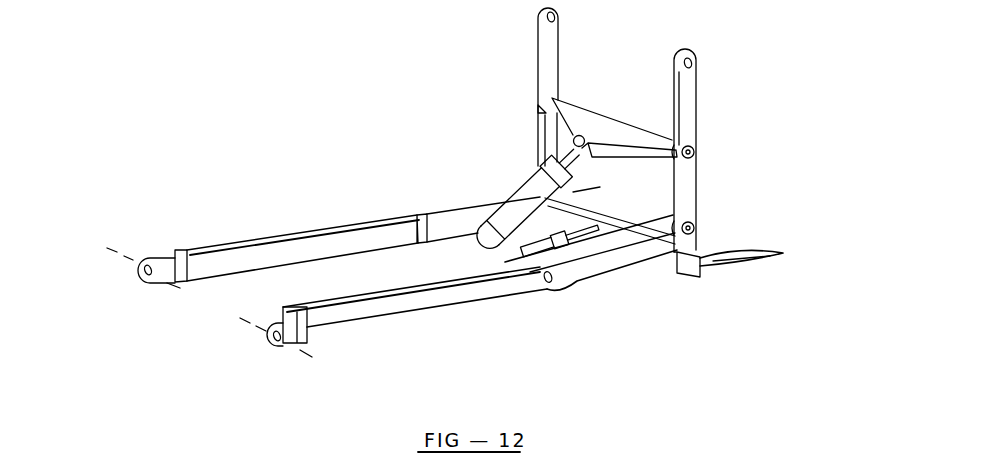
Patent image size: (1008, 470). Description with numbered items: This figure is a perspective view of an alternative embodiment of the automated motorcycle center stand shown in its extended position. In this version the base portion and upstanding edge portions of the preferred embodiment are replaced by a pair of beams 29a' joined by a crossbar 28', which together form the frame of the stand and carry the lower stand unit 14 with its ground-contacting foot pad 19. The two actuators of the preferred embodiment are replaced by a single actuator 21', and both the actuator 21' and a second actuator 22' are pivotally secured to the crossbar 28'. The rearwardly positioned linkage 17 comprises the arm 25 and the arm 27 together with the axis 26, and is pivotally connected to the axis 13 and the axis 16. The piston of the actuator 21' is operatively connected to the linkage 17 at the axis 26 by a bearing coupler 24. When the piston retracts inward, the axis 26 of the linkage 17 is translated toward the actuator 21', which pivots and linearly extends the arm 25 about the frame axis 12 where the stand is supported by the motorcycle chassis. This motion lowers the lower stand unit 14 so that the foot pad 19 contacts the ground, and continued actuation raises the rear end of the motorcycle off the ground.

The axis 12 is at (146, 263).
The axis 13 is at (692, 61).
The lower stand unit 14 is at (362, 330).
The axis 16 is at (694, 228).
The linkage 17 is at (733, 97).
The foot pad 19 is at (738, 262).
The actuator 21' is at (496, 190).
The actuator 22' is at (598, 277).
The bearing coupler 24 is at (600, 122).
The arm 25 is at (547, 52).
The axis 26 is at (694, 151).
The arm 27 is at (542, 133).
The crossbar 28' is at (591, 298).
The beam 29a' is at (387, 260).